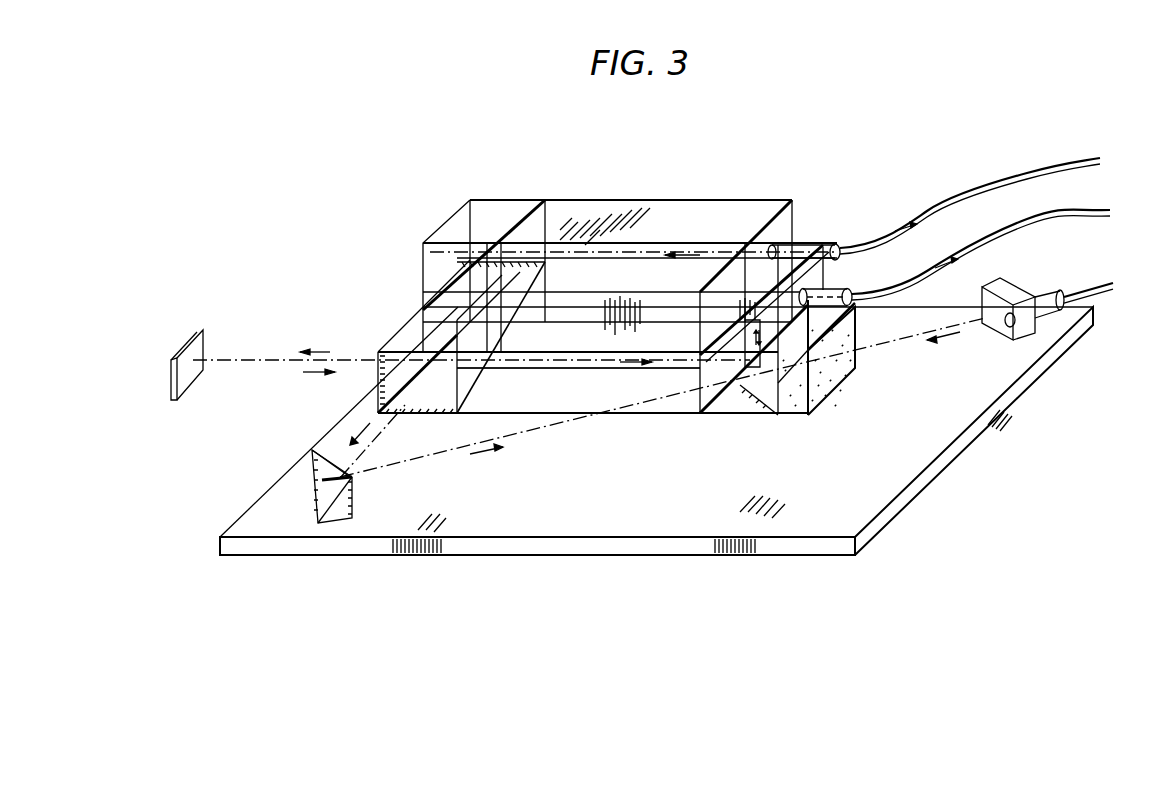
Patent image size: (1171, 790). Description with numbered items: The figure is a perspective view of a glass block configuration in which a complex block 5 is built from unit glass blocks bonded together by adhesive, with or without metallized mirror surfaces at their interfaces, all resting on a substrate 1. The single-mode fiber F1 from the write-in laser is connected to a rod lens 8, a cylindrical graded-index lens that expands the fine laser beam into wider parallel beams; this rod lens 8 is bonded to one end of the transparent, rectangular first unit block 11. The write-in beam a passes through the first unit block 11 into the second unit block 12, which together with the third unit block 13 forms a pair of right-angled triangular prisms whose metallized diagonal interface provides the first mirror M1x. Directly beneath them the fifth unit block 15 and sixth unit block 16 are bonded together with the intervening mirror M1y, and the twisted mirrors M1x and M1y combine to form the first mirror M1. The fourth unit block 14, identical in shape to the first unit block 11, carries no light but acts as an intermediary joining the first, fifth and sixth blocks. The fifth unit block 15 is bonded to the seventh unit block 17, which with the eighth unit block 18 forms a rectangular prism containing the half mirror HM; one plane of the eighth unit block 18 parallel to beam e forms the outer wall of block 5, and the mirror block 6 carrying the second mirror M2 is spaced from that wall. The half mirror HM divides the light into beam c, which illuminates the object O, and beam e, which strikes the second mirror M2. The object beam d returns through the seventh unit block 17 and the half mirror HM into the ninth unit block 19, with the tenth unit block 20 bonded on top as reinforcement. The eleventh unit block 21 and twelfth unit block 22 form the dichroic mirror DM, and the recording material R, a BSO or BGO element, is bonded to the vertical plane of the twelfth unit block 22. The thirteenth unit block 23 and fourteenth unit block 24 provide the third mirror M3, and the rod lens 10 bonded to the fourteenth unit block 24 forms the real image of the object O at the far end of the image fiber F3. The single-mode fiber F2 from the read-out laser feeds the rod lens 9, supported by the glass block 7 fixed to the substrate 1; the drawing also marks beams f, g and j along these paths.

The substrate 1 is at (622, 522).
The complex block 5 is at (640, 148).
The mirror block 6 is at (279, 519).
The glass block 7 is at (1049, 324).
The rod lens 8 is at (830, 242).
The rod lens 9 is at (1062, 315).
The rod lens 10 is at (850, 290).
The first unit block 11 is at (608, 215).
The second unit block 12 is at (538, 227).
The third unit block 13 is at (507, 205).
The fourth unit block 14 is at (650, 273).
The fifth unit block 15 is at (430, 317).
The sixth unit block 16 is at (450, 283).
The seventh unit block 17 is at (410, 325).
The eighth unit block 18 is at (422, 342).
The ninth unit block 19 is at (620, 382).
The tenth unit block 20 is at (577, 340).
The eleventh unit block 21 is at (737, 375).
The twelfth unit block 22 is at (772, 387).
The thirteenth unit block 23 is at (755, 270).
The fourteenth unit block 24 is at (807, 273).
The first mirror M1 is at (451, 288).
The first mirror M1x is at (497, 240).
The first mirror M1y is at (465, 262).
The second mirror M2 is at (333, 500).
The third mirror M3 is at (700, 397).
The half mirror HM is at (400, 348).
The dichroic mirror DM is at (782, 270).
The recording material R is at (820, 383).
The object O is at (183, 343).
The single-mode fiber F1 is at (1010, 185).
The single-mode fiber F2 is at (1095, 281).
The image fiber F3 is at (1045, 220).
The write-in beam a is at (905, 219).
The beam c is at (471, 352).
The object beam d is at (308, 372).
The beam e is at (372, 441).
The beam f is at (662, 398).
The beam g is at (943, 347).
The beam j is at (946, 253).